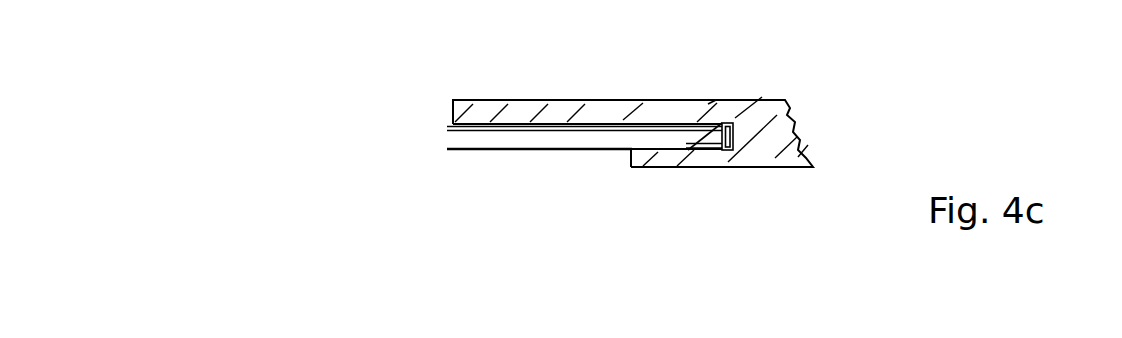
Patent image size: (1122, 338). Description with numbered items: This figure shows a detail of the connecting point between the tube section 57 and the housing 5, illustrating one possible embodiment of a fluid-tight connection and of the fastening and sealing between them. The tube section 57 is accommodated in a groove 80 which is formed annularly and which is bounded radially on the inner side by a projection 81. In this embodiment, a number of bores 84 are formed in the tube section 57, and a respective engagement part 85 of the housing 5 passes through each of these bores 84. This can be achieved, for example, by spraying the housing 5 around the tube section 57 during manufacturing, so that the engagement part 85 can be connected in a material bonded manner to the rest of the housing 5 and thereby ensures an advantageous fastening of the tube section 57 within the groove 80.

The housing 5 is at (485, 112).
The tube section 57 is at (513, 150).
The groove 80 is at (700, 143).
The projection 81 is at (638, 165).
The bores 84 is at (705, 134).
The engagement part 85 is at (698, 120).